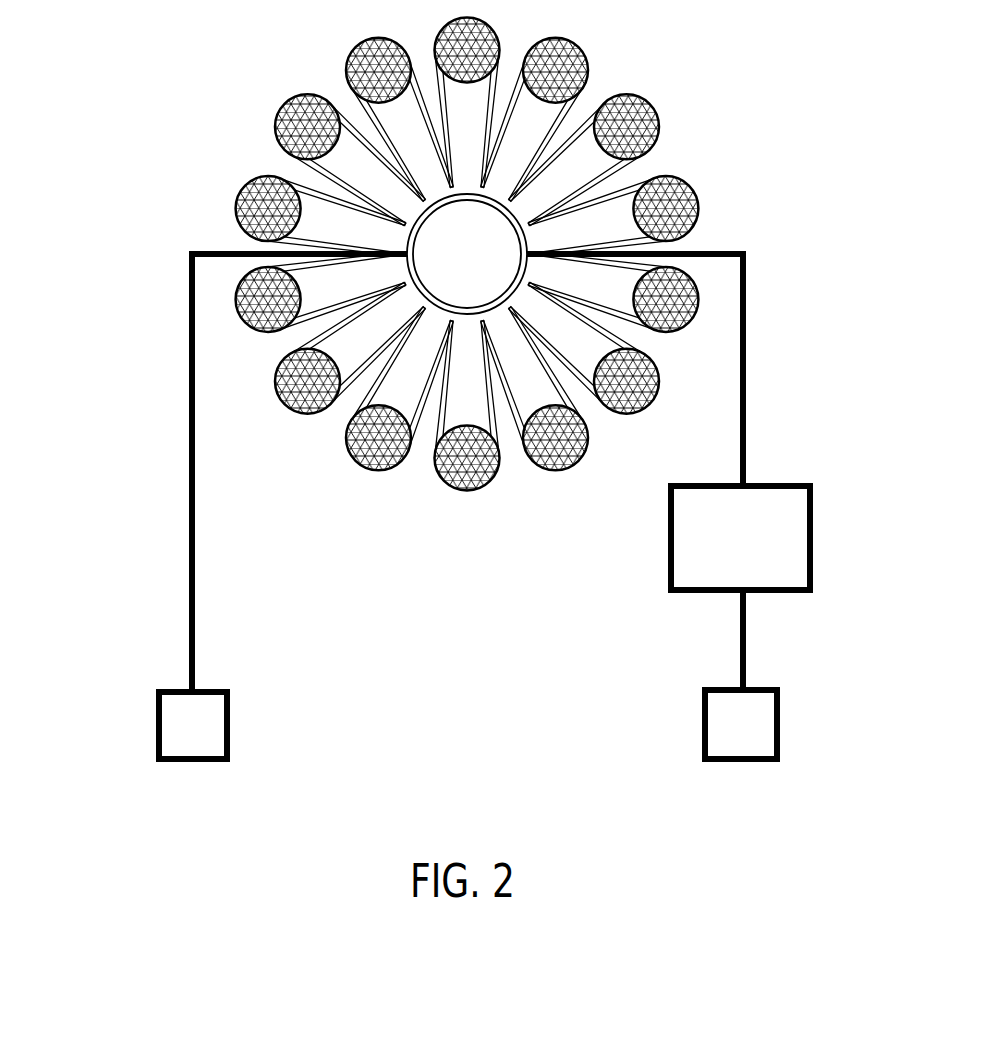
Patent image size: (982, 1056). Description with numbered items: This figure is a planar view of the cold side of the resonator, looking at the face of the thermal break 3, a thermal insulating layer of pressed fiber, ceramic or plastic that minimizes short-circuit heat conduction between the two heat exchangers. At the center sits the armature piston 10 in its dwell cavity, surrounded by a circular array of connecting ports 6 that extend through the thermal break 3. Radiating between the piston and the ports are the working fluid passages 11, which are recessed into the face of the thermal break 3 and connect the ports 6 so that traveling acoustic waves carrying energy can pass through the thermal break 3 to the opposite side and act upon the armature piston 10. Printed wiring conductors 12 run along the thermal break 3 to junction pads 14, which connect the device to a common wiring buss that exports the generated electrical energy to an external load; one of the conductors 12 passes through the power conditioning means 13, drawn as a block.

The thermal break 3 is at (845, 125).
The connecting ports 6 is at (348, 67).
The armature piston 10 is at (467, 254).
The working fluid passages 11 is at (577, 155).
The printed wiring conductors 12 is at (187, 508).
The power conditioning means 13 is at (765, 505).
The junction pads 14 is at (173, 723).